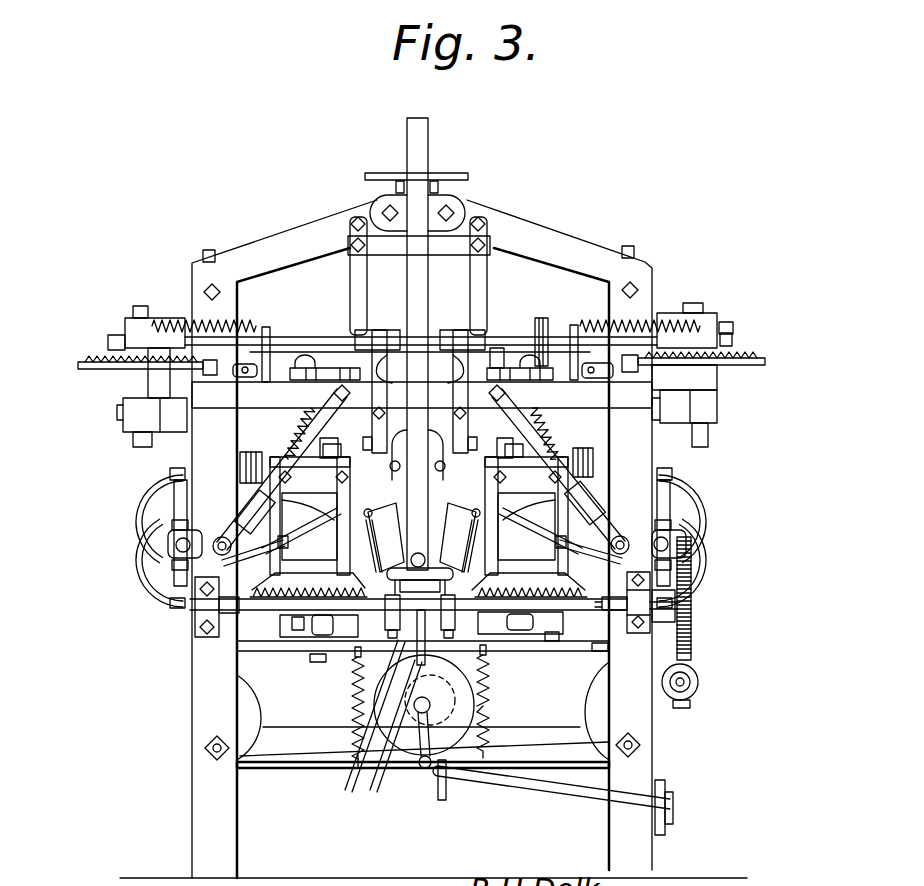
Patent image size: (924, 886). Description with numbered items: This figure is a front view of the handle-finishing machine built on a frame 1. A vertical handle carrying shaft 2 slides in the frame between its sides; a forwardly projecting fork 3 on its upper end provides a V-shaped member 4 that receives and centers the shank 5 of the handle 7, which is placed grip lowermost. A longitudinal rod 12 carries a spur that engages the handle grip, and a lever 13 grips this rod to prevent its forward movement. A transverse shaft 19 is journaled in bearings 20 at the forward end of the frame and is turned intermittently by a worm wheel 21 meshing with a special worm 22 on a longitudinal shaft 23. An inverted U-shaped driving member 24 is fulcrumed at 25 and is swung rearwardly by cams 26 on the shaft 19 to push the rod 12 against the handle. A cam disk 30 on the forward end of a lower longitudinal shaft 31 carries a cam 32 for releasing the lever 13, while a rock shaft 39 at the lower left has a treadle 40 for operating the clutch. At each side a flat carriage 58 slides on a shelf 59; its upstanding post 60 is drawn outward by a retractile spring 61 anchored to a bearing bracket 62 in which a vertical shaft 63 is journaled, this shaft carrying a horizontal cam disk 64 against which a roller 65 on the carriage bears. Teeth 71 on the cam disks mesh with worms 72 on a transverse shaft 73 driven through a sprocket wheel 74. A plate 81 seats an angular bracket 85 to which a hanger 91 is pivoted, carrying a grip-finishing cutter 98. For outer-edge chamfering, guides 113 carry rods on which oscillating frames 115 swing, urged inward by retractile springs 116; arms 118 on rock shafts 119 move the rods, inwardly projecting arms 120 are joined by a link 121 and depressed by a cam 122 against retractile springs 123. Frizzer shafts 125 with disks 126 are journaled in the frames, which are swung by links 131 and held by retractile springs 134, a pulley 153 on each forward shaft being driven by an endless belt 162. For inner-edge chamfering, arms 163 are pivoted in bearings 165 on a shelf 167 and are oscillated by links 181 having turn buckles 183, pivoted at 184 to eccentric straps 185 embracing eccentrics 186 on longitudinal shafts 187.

The frame 1 is at (208, 700).
The handle carrying shaft 2 is at (440, 285).
The fork 3 is at (448, 174).
The V-shaped member 4 is at (388, 174).
The shank of the handle 5 is at (418, 128).
The handle 7 is at (417, 500).
The rod 12 is at (420, 588).
The lever 13 is at (392, 775).
The transverse shaft 19 is at (641, 610).
The bearings 20 is at (680, 624).
The worm wheel 21 is at (691, 613).
The worm 22 is at (698, 694).
The longitudinal shaft 23 is at (684, 680).
The driving member 24 is at (358, 587).
The fulcrum 25 is at (361, 668).
The cams 26 is at (322, 636).
The cam disk 30 is at (447, 800).
The lower longitudinal shaft 31 is at (432, 770).
The cam 32 is at (364, 772).
The rock shaft 39 is at (674, 803).
The treadle 40 is at (472, 781).
The carriage 58 is at (555, 300).
The shelf 59 is at (215, 395).
The post 60 is at (576, 330).
The retractile spring 61 is at (632, 360).
The bearing bracket 62 is at (702, 323).
The vertical shaft 63 is at (698, 312).
The cam disk 64 is at (733, 362).
The roller 65 is at (635, 330).
The teeth 71 is at (738, 352).
The worms 72 is at (732, 348).
The transverse shaft 73 is at (497, 345).
The sprocket wheel 74 is at (543, 317).
The plate 81 is at (523, 365).
The angular bracket 85 is at (478, 345).
The hanger 91 is at (450, 352).
The grip-finishing cutter 98 is at (398, 450).
The guides 113 is at (558, 620).
The oscillating frame 115 is at (232, 553).
The retractile springs 116 is at (280, 640).
The arms 118 is at (590, 706).
The rock shafts 119 is at (640, 746).
The arms 120 is at (555, 745).
The link 121 is at (410, 800).
The cam 122 is at (488, 667).
The retractile springs 123 is at (488, 702).
The frizzer shafts 125 is at (337, 467).
The disk 126 is at (440, 477).
The links 131 is at (327, 438).
The retractile springs 134 is at (422, 395).
The pulley 153 is at (298, 450).
The endless belt 162 is at (243, 452).
The arms 163 is at (363, 540).
The bearings 165 is at (597, 647).
The shelf 167 is at (552, 645).
The links 181 is at (265, 494).
The turn buckles 183 is at (290, 517).
The pivot 184 is at (680, 560).
The eccentric straps 185 is at (698, 490).
The eccentrics 186 is at (690, 522).
The longitudinal shafts 187 is at (668, 537).